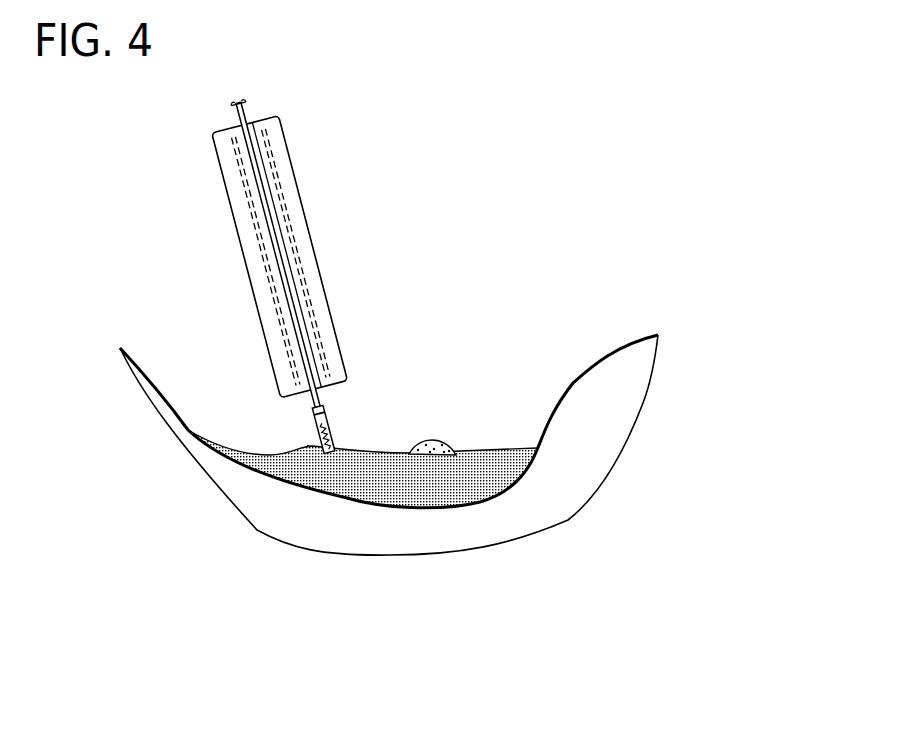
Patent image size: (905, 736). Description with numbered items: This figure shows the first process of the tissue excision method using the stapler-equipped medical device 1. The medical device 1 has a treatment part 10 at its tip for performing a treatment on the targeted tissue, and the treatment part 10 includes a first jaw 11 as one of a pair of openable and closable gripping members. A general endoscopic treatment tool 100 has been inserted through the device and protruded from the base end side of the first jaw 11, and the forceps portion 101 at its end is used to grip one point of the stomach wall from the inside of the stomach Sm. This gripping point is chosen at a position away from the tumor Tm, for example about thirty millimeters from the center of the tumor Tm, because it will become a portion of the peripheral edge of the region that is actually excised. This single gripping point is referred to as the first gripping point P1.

The medical device 1 is at (213, 200).
The treatment part 10 is at (349, 239).
The first jaw 11 is at (292, 198).
The treatment tool 100 is at (247, 112).
The forceps portion 101 is at (329, 427).
The first gripping point P1 is at (303, 438).
The stomach Sm is at (566, 353).
The tumor Tm is at (437, 447).